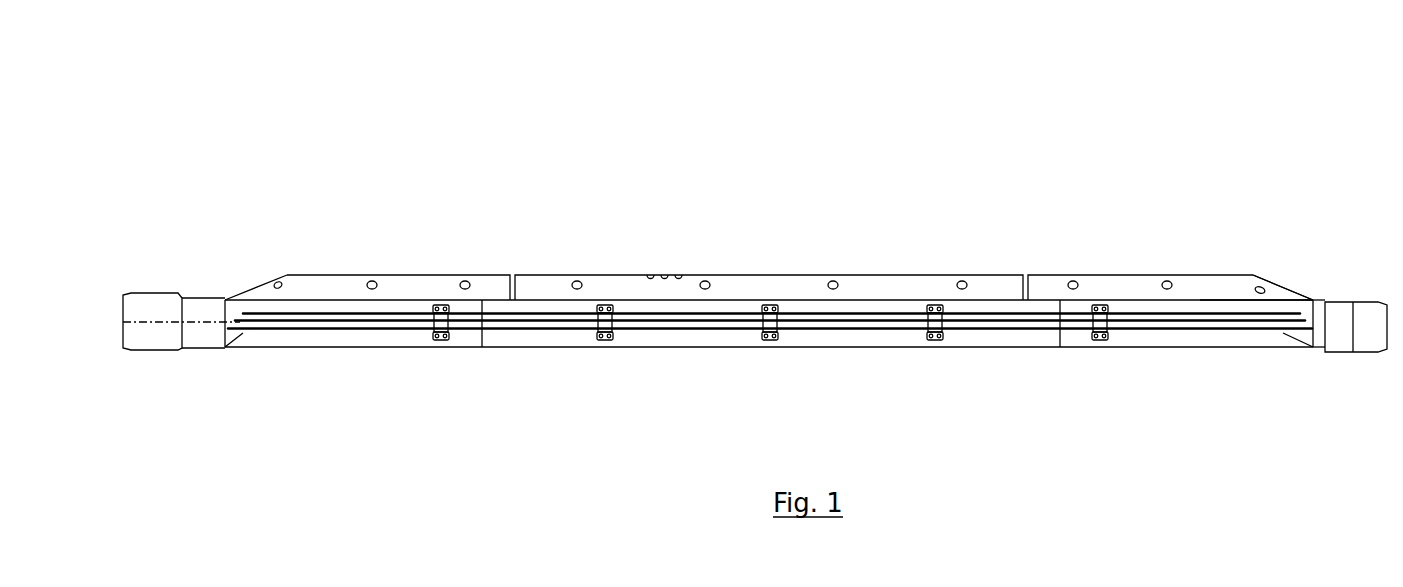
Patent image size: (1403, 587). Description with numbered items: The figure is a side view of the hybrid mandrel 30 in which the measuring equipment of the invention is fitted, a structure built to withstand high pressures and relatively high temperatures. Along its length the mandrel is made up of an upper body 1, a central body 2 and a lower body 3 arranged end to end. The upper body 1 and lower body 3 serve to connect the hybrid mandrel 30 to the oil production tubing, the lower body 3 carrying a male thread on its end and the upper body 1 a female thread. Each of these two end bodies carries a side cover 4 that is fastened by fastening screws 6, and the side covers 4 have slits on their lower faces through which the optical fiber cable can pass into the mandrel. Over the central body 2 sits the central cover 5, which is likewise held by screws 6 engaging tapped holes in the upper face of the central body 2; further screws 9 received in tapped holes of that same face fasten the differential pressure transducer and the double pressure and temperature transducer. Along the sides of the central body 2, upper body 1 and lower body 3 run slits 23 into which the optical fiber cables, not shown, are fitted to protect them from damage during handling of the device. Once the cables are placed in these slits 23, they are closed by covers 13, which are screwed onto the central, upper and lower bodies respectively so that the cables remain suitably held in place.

The upper body 1 is at (297, 305).
The central body 2 is at (677, 338).
The lower body 3 is at (1205, 310).
The side cover 4 is at (338, 287).
The central cover 5 is at (738, 288).
The fastening screws 6 is at (577, 285).
The screws 9 is at (650, 278).
The covers 13 is at (607, 332).
The slits 23 is at (345, 328).
The hybrid mandrel 30 is at (921, 179).